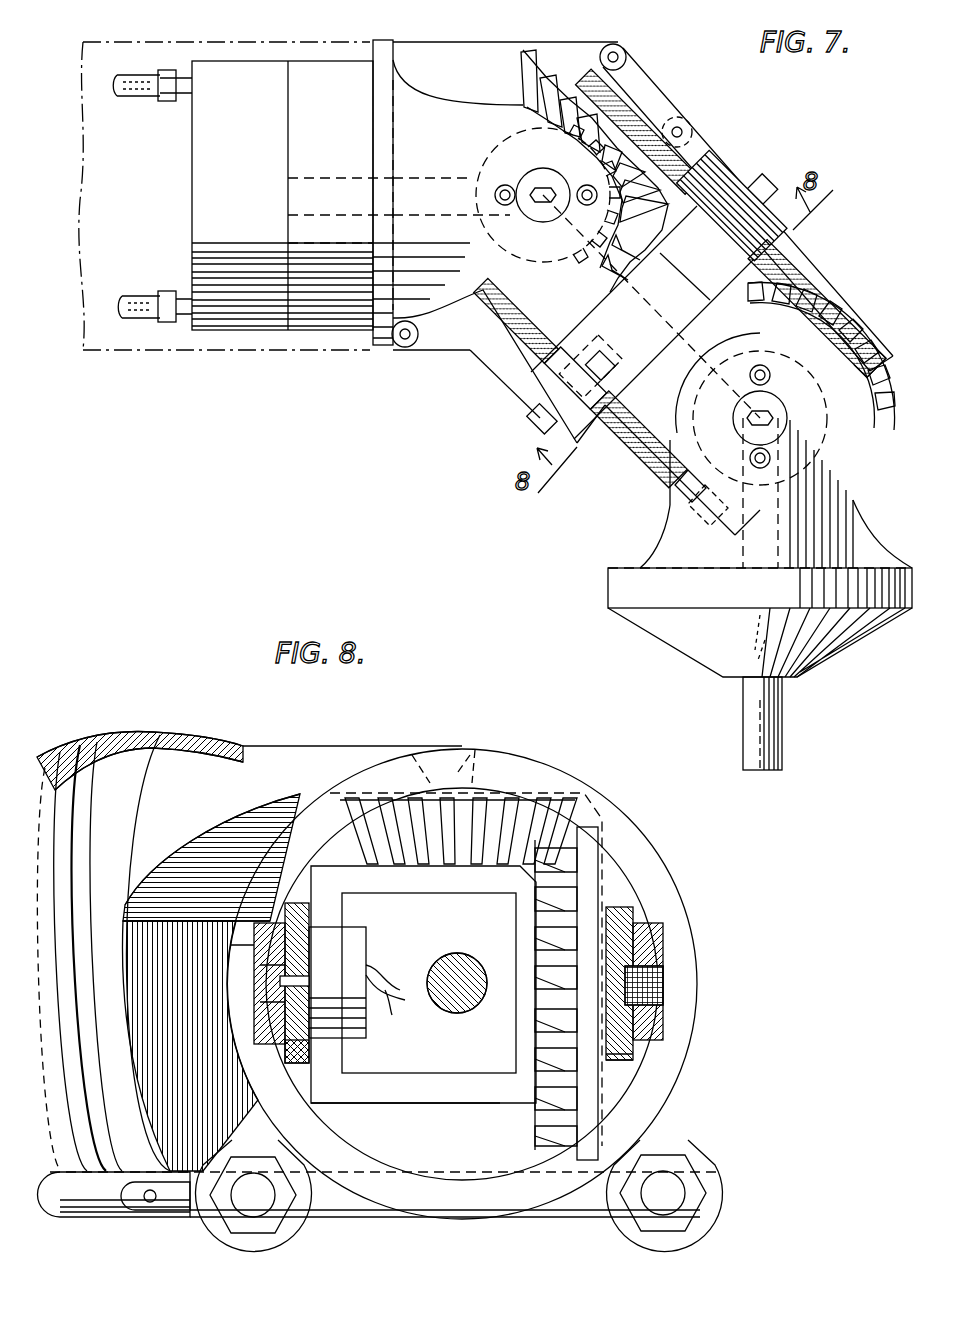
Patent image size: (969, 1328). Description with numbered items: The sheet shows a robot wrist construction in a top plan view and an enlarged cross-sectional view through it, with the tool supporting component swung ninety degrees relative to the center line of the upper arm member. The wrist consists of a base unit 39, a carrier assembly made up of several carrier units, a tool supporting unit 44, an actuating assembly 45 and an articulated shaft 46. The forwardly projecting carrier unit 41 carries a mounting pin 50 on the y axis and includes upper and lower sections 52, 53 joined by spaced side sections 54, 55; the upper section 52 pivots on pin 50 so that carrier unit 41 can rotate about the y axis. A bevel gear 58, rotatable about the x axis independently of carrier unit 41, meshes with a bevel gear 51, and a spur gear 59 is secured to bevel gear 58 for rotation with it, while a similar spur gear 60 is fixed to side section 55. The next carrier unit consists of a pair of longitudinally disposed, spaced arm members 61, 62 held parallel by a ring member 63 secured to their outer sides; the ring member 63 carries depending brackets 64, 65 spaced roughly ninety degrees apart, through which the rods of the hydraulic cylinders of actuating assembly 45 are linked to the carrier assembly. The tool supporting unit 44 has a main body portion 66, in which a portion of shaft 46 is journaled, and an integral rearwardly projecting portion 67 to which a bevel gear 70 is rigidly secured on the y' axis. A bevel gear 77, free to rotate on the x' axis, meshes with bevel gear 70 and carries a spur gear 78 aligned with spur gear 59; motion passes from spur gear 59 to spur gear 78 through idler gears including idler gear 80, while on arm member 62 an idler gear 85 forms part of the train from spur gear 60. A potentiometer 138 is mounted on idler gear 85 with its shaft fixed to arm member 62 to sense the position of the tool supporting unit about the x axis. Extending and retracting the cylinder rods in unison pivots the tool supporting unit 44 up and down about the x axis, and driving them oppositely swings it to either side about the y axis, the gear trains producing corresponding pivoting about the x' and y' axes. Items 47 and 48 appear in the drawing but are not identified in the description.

In FIG. 7, the base unit 39 is at (271, 56).
In FIG. 8, the base unit 39 is at (284, 745).
In FIG. 8, the carrier unit 41 is at (505, 1039).
In FIG. 7, the tool supporting unit 44 is at (602, 590).
In FIG. 8, the actuating assembly 45 is at (120, 1227).
In FIG. 7, the articulated shaft 46 is at (786, 737).
In FIG. 7, the motor 47 is at (252, 166).
In FIG. 8, the motor 47 is at (103, 1021).
In FIG. 7, the gear housing 48 is at (455, 140).
In FIG. 8, the gear housing 48 is at (377, 746).
In FIG. 8, the mounting pin 50 is at (480, 760).
In FIG. 7, the bevel gear 51 is at (604, 262).
In FIG. 8, the bevel gear 51 is at (495, 800).
In FIG. 8, the upper section 52 is at (440, 895).
In FIG. 8, the lower section 53 is at (435, 1103).
In FIG. 8, the side section 54 is at (513, 943).
In FIG. 8, the side section 55 is at (340, 918).
In FIG. 7, the bevel gear 58 is at (523, 80).
In FIG. 8, the bevel gear 58 is at (590, 875).
In FIG. 7, the spur gear 59 is at (615, 95).
In FIG. 7, the spur gear 60 is at (488, 330).
In FIG. 7, the arm member 61 is at (818, 290).
In FIG. 8, the arm member 61 is at (655, 948).
In FIG. 7, the arm member 62 is at (662, 470).
In FIG. 8, the arm member 62 is at (275, 945).
In FIG. 7, the ring member 63 is at (780, 240).
In FIG. 8, the ring member 63 is at (710, 990).
In FIG. 7, the depending bracket 64 is at (528, 424).
In FIG. 8, the depending bracket 64 is at (255, 1250).
In FIG. 7, the depending bracket 65 is at (768, 182).
In FIG. 8, the depending bracket 65 is at (657, 1250).
In FIG. 7, the main body portion 66 is at (820, 645).
In FIG. 7, the rearwardly projecting portion 67 is at (835, 522).
In FIG. 7, the bevel gear 70 is at (705, 375).
In FIG. 7, the bevel gear 77 is at (885, 395).
In FIG. 7, the spur gear 78 is at (876, 372).
In FIG. 8, the idler gear 80 is at (628, 1050).
In FIG. 8, the idler gear 85 is at (300, 1052).
In FIG. 7, the potentiometer 138 is at (640, 435).
In FIG. 8, the potentiometer 138 is at (364, 982).